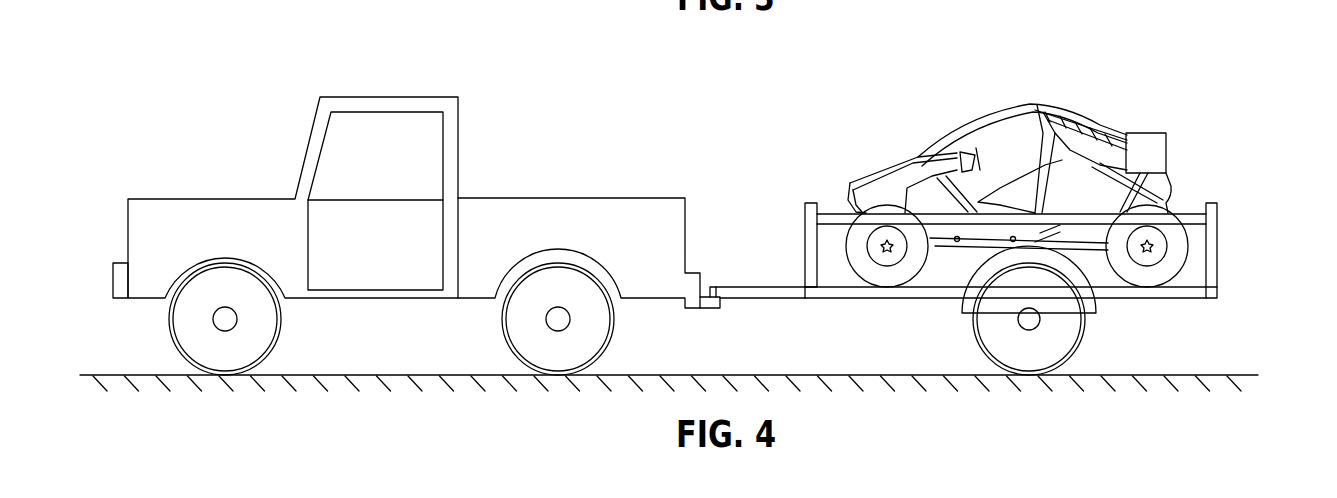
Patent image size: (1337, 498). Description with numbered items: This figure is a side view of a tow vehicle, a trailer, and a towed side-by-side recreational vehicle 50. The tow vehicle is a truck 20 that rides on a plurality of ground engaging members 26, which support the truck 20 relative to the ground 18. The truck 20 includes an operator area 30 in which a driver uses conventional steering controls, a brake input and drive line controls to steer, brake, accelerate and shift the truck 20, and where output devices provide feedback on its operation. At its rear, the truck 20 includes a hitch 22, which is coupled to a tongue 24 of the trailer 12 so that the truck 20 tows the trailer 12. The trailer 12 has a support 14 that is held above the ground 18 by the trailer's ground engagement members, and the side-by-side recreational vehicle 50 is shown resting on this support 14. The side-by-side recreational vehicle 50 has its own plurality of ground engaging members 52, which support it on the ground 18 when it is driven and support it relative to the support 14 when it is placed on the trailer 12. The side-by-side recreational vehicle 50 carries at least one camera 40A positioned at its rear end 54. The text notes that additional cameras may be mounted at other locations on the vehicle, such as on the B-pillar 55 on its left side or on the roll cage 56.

The trailer 12 is at (1020, 187).
The support 14 is at (843, 285).
The ground 18 is at (133, 375).
The truck 20 is at (470, 225).
The hitch 22 is at (718, 310).
The tongue 24 is at (743, 278).
The ground engaging members 26 is at (222, 353).
The operator area 30 is at (387, 140).
The camera 40A is at (1155, 133).
The side-by-side recreational vehicle 50 is at (1064, 187).
The ground engaging members 52 is at (895, 272).
The rear end 54 is at (1183, 197).
The B-pillar 55 is at (1063, 118).
The roll cage 56 is at (990, 105).